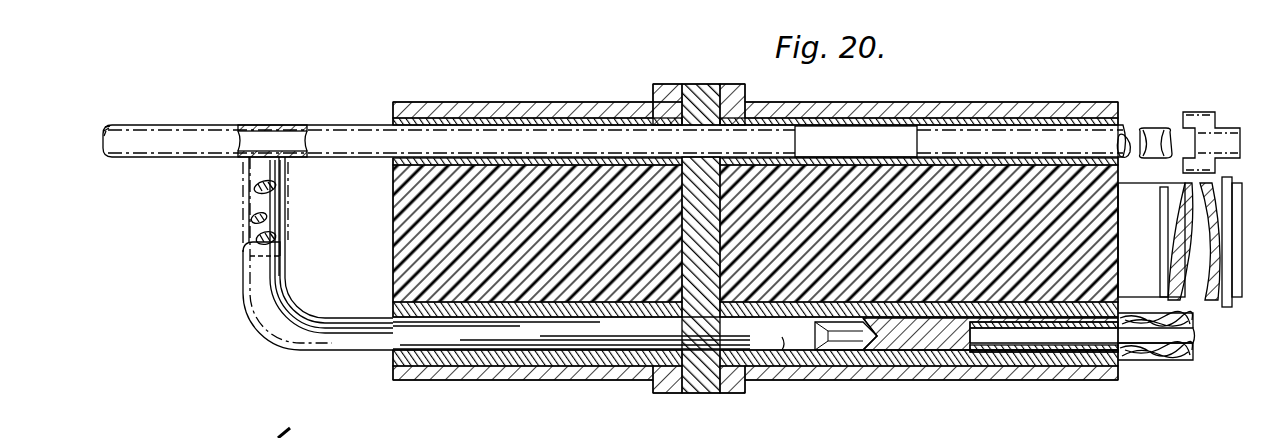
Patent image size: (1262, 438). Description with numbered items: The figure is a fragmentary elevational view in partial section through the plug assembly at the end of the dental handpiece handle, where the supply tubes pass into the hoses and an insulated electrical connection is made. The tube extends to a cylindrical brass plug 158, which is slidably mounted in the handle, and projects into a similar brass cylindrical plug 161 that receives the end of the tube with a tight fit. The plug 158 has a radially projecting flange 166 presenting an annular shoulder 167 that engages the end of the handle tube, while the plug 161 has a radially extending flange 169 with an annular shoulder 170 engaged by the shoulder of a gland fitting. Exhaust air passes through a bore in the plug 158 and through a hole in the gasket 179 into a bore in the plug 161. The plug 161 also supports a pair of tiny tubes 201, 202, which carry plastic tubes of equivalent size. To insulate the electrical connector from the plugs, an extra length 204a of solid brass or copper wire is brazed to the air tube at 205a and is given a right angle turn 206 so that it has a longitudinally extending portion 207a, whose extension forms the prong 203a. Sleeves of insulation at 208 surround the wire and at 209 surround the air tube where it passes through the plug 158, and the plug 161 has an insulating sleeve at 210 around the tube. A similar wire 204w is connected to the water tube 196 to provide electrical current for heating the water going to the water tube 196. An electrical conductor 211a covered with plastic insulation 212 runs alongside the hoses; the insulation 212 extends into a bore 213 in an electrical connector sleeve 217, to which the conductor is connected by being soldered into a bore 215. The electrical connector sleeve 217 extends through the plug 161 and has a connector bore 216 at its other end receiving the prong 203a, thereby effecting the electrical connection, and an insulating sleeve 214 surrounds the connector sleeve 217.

The cylindrical brass plug 158 is at (558, 99).
The brass cylindrical plug 161 is at (952, 99).
The radially projecting flange 166 is at (654, 92).
The annular shoulder 167 is at (657, 84).
The radially extending flange 169 is at (720, 86).
The annular shoulder 170 is at (745, 104).
The gasket 179 is at (700, 84).
The water tube 196 is at (347, 140).
The tiny tube 201 is at (1118, 146).
The tiny tube 202 is at (1157, 130).
The prong 203a is at (752, 378).
The extra length of solid brass or copper wire 204a is at (308, 306).
The wire 204w is at (270, 209).
The brazed joint 205a is at (263, 148).
The right angle turn 206 is at (258, 332).
The longitudinally extending portion 207a is at (577, 368).
The sleeve of insulation 208 is at (519, 368).
The sleeve of insulation 209 is at (497, 118).
The insulating sleeve 210 is at (774, 120).
The electrical conductor 211a is at (1021, 346).
The plastic insulation 212 is at (1140, 357).
The bore 213 is at (1048, 356).
The insulating sleeve 214 is at (926, 337).
The bore 215 is at (1099, 375).
The connector bore 216 is at (840, 355).
The electrical connector sleeve 217 is at (896, 355).